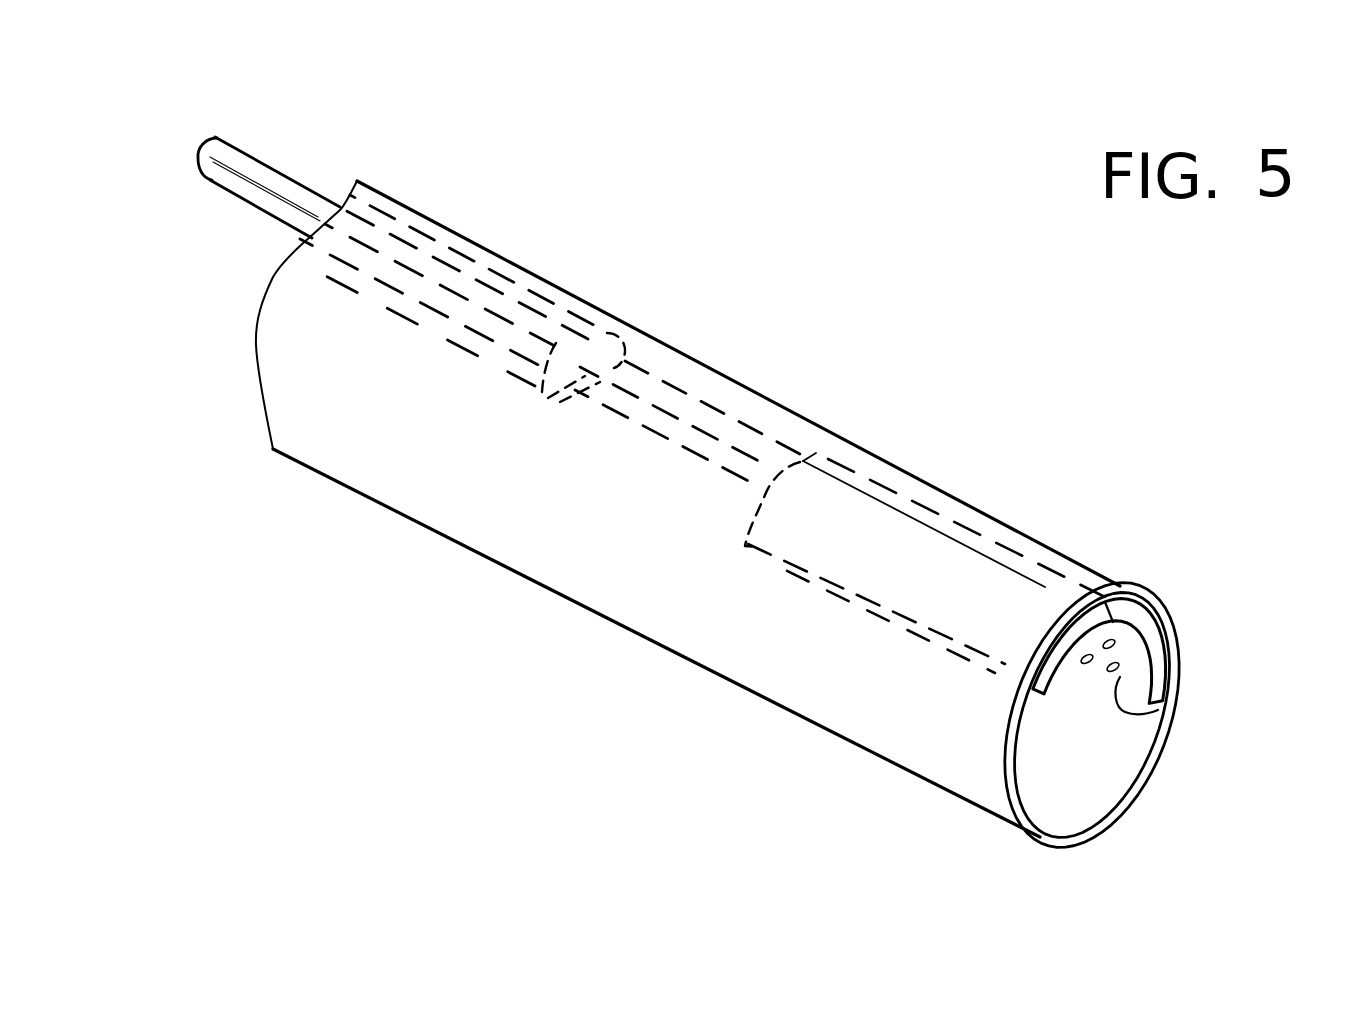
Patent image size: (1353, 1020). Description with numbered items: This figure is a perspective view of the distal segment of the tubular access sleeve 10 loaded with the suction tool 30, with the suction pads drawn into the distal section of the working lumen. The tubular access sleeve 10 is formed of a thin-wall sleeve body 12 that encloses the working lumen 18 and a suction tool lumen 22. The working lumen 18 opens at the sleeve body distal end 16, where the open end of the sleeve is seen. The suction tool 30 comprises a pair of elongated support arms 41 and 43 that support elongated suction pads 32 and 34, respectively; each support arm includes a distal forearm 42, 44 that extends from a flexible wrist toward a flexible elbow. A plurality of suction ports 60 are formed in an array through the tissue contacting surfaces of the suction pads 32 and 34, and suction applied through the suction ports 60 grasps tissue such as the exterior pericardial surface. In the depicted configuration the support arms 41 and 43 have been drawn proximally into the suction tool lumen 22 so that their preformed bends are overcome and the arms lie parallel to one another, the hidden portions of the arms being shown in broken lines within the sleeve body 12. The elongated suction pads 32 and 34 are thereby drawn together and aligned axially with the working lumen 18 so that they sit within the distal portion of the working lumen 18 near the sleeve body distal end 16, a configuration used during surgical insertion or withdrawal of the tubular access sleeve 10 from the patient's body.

The tubular access sleeve 10 is at (711, 432).
The sleeve body 12 is at (687, 509).
The sleeve body distal end 16 is at (1113, 670).
The working lumen 18 is at (1146, 715).
The suction tool lumen 22 is at (473, 290).
The suction tool 30 is at (274, 148).
The suction pad 32 is at (925, 549).
The suction pad 34 is at (1145, 644).
The support arm 41 is at (229, 218).
The distal forearm 42 is at (657, 529).
The support arm 43 is at (269, 112).
The distal forearm 44 is at (704, 393).
The suction ports 60 is at (1199, 689).